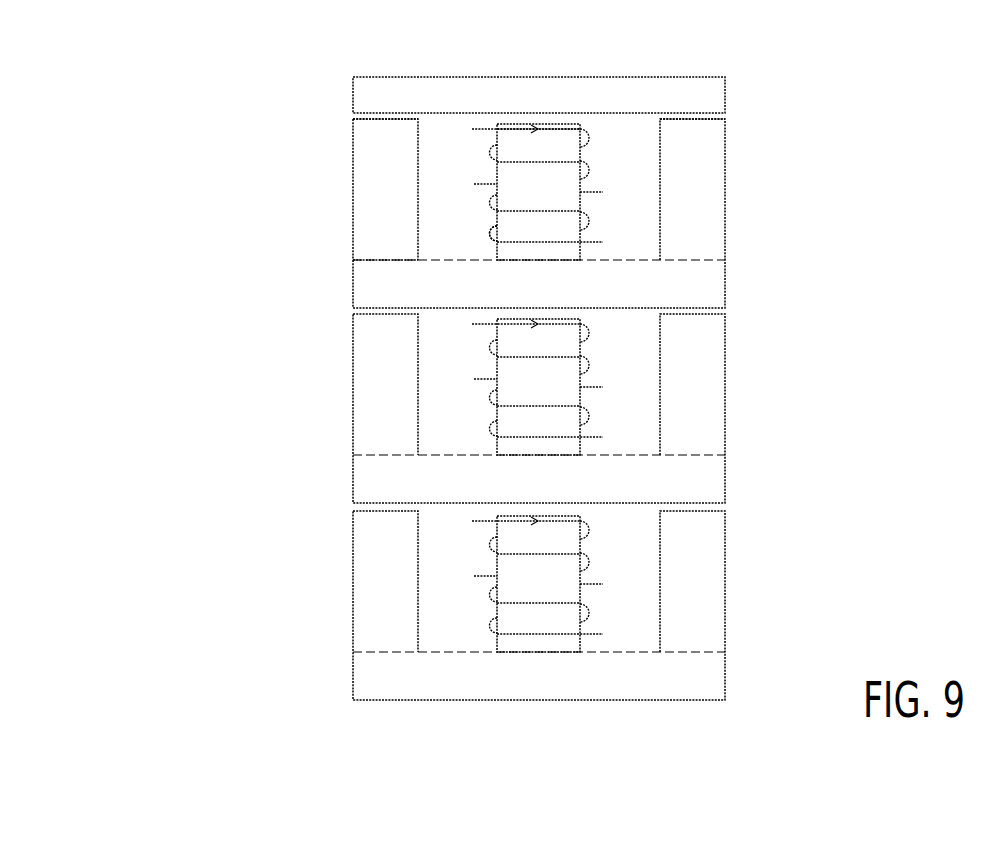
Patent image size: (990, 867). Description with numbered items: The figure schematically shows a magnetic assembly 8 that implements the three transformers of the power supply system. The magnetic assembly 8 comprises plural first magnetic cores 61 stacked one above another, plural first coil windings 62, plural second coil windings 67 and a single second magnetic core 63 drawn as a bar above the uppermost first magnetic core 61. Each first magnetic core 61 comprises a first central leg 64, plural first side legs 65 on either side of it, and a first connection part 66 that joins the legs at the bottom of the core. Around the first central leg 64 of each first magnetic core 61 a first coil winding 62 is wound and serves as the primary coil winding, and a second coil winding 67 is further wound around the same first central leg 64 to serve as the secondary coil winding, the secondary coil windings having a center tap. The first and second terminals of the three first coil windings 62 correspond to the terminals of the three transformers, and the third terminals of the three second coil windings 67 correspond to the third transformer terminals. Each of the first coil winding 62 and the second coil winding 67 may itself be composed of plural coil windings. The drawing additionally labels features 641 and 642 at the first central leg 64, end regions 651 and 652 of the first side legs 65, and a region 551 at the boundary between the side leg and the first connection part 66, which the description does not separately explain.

The magnetic assembly 8 is at (185, 141).
The first magnetic core 61 is at (798, 273).
The first coil winding 62 is at (597, 138).
The second magnetic core 63 is at (628, 70).
The first central leg 64 is at (551, 172).
The center leg 641 is at (525, 255).
The winding wire 642 is at (538, 123).
The first side leg 65 is at (372, 188).
The bottom end of side leg 651 is at (380, 260).
The top end of side leg 652 is at (388, 121).
The first connection part 66 is at (388, 287).
The second coil winding 67 is at (483, 233).
The bottom surface 551 is at (698, 260).